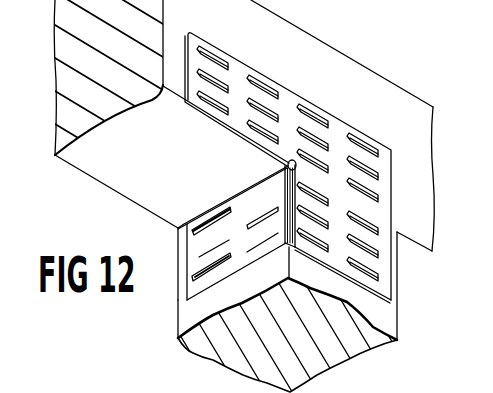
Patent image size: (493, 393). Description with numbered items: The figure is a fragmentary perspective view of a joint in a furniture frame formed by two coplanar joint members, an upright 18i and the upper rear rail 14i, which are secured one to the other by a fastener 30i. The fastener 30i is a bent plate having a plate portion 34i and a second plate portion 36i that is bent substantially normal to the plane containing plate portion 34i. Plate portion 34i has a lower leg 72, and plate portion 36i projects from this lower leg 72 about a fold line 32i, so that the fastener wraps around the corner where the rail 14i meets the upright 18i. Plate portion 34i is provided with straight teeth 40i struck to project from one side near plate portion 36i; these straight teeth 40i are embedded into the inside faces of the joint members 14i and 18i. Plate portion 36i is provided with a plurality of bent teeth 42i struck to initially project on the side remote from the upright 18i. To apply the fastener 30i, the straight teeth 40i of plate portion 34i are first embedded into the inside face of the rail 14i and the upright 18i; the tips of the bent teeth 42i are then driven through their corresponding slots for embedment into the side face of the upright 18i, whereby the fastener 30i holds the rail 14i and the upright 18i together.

The upper rear rail 14i is at (371, 72).
The upright 18i is at (398, 311).
The fastener 30i is at (407, 213).
The fold line 32i is at (294, 250).
The plate portion 34i is at (302, 99).
The plate portion 36i is at (192, 249).
The straight teeth 40i is at (372, 150).
The bent teeth 42i is at (238, 252).
The lower leg 72 is at (348, 281).